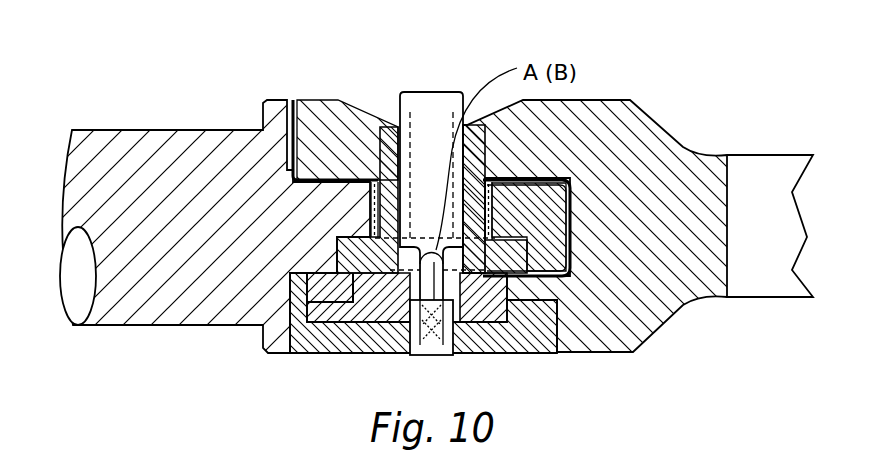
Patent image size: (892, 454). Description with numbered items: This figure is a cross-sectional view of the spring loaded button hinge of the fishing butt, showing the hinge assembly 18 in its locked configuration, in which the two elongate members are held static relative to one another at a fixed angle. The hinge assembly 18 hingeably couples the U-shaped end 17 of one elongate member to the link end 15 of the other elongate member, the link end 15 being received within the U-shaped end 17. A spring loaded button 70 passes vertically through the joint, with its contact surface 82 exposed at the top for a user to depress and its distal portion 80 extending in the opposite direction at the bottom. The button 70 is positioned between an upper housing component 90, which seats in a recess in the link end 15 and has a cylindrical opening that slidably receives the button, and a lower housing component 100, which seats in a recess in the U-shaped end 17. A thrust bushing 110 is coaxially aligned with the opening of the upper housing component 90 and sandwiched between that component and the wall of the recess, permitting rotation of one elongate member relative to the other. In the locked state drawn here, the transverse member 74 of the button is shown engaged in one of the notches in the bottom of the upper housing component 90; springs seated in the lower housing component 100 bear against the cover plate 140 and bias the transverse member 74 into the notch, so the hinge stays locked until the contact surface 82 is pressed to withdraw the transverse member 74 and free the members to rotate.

The link end 15 is at (128, 131).
The U-shaped end 17 is at (611, 102).
The hinge assembly 18 is at (157, 47).
The spring loaded button 70 is at (450, 93).
The transverse member 74 is at (565, 282).
The distal portion 80 is at (437, 332).
The contact surface 82 is at (415, 91).
The upper housing component 90 is at (325, 252).
The lower housing component 100 is at (303, 314).
The thrust bushing 110 is at (322, 200).
The cover plate 140 is at (370, 356).